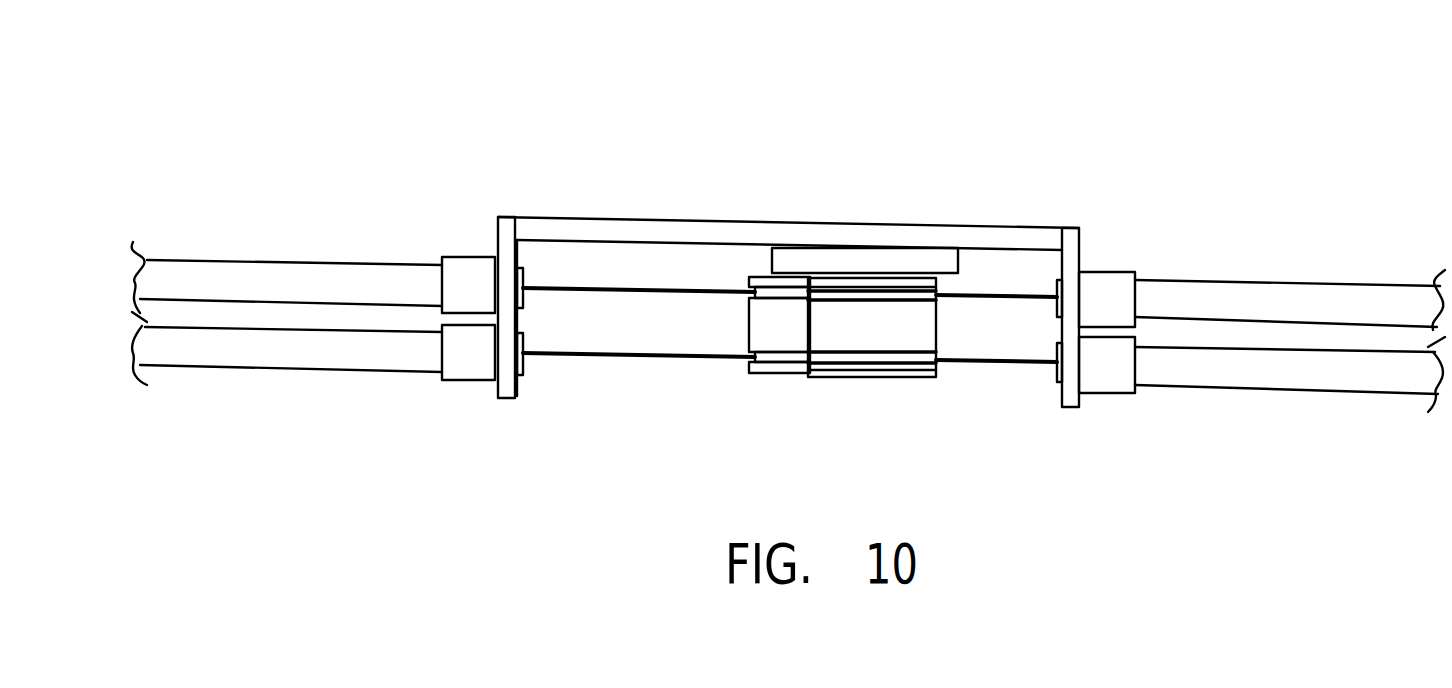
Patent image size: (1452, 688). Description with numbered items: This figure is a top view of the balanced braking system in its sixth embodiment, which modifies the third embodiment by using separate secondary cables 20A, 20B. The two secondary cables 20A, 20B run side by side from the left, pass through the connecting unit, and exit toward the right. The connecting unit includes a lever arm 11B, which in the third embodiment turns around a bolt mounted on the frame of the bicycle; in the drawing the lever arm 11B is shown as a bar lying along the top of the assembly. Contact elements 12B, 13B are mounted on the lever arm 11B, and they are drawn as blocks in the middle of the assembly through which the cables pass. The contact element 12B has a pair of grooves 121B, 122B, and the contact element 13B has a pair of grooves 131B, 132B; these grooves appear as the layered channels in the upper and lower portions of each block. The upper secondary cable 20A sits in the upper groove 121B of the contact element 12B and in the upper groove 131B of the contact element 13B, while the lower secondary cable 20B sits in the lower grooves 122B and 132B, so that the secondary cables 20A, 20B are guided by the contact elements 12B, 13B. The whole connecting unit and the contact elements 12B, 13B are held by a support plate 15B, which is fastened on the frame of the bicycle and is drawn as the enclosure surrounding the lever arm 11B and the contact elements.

The support plate 15B is at (642, 228).
The secondary cable 20A is at (570, 285).
The secondary cable 20B is at (555, 360).
The contact element 13B is at (708, 286).
The groove 131B is at (765, 295).
The groove 132B is at (770, 362).
The lever arm 11B is at (925, 262).
The contact element 12B is at (931, 314).
The groove 121B is at (875, 288).
The groove 122B is at (890, 337).